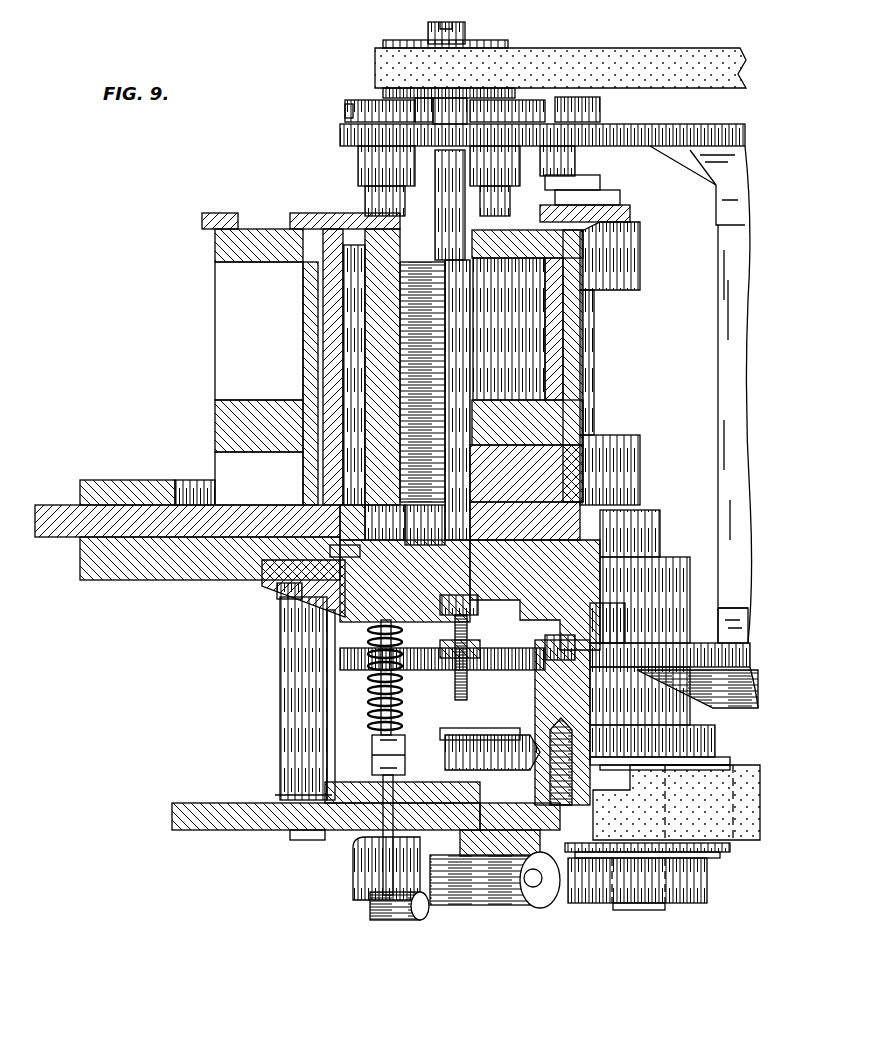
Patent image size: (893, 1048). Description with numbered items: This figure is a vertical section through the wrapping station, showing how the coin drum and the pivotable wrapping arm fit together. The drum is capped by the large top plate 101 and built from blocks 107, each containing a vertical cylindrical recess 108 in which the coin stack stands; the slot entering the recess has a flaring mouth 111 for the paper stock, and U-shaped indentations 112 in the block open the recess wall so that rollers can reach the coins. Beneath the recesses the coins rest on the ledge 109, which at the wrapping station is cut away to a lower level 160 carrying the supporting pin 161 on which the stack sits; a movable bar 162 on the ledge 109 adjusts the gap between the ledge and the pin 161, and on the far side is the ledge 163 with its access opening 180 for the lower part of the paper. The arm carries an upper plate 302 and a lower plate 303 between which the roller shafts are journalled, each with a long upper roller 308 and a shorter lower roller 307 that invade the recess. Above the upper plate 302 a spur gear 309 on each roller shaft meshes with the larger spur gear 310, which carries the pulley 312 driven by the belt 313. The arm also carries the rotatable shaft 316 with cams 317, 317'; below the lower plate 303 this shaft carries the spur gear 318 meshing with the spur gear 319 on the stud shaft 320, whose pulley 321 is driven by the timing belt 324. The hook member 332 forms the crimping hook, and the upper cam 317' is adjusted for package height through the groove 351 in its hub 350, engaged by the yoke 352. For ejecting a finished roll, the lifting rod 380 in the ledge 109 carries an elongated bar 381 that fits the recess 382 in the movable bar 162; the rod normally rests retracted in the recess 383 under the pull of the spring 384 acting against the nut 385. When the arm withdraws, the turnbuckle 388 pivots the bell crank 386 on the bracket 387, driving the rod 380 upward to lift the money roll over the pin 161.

The top plate 101 is at (220, 212).
The block 107 is at (217, 412).
The recess 108 is at (437, 345).
The ledge 109 is at (118, 578).
The flaring mouth 111 is at (320, 284).
The U-shaped indentation 112 is at (273, 362).
The lower level 160 is at (470, 595).
The supporting pin 161 is at (429, 525).
The movable bar 162 is at (65, 505).
The ledge 163 is at (525, 509).
The access opening 180 is at (597, 523).
The upper plate 302 is at (690, 128).
The lower plate 303 is at (458, 665).
The lower roller 307 is at (518, 479).
The upper roller 308 is at (355, 318).
The spur gear 309 is at (345, 110).
The larger spur gear 310 is at (378, 100).
The pulley 312 is at (508, 46).
The belt 313 is at (632, 52).
The rotatable shaft 316 is at (596, 362).
The cam 317 is at (638, 470).
The cam 317' is at (640, 256).
The spur gear 318 is at (496, 763).
The spur gear 319 is at (715, 727).
The stud shaft 320 is at (637, 910).
The pulley 321 is at (724, 860).
The timing belt 324 is at (745, 842).
The hook member 332 is at (440, 225).
The hub 350 is at (610, 212).
The groove 351 is at (603, 182).
The yoke 352 is at (622, 198).
The lifting rod 380 is at (378, 680).
The elongated bar 381 is at (300, 597).
The recess 382 is at (345, 518).
The recess 383 is at (335, 552).
The spring 384 is at (384, 708).
The nut 385 is at (372, 750).
The bell crank 386 is at (425, 910).
The bracket 387 is at (217, 826).
The turnbuckle 388 is at (488, 728).